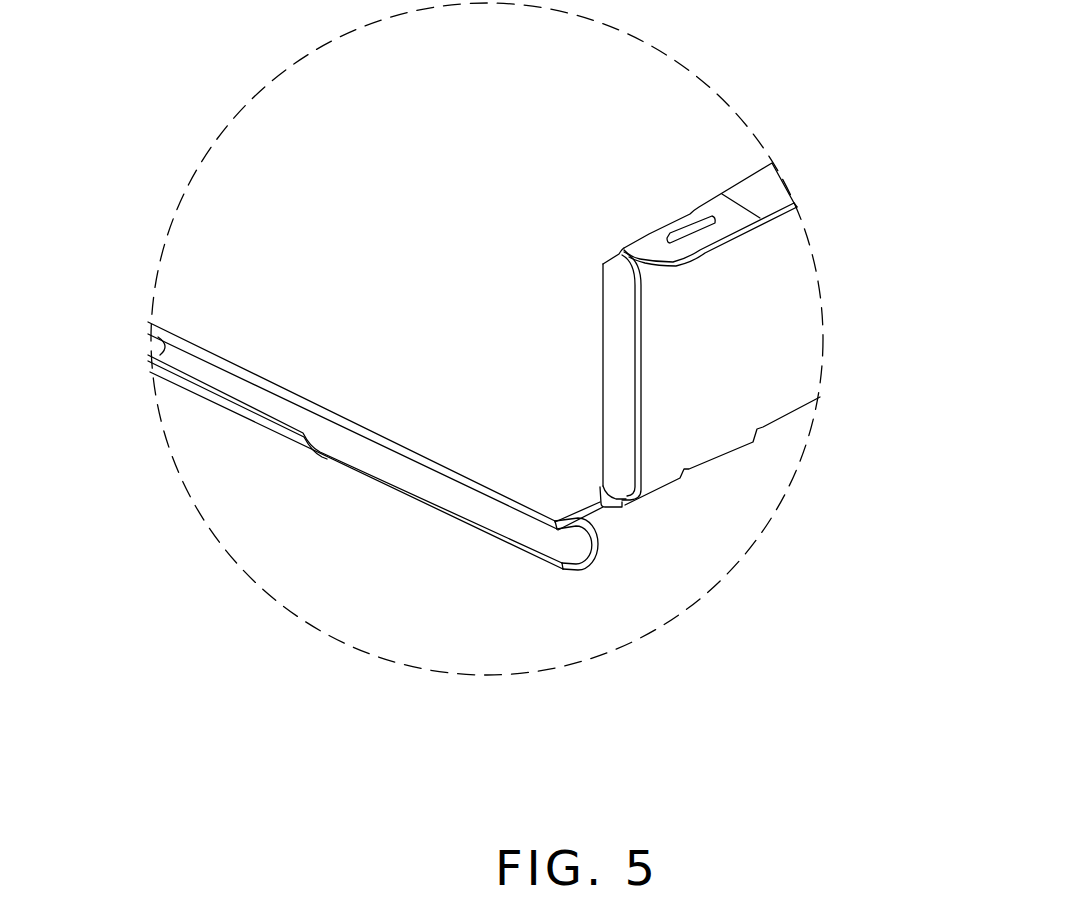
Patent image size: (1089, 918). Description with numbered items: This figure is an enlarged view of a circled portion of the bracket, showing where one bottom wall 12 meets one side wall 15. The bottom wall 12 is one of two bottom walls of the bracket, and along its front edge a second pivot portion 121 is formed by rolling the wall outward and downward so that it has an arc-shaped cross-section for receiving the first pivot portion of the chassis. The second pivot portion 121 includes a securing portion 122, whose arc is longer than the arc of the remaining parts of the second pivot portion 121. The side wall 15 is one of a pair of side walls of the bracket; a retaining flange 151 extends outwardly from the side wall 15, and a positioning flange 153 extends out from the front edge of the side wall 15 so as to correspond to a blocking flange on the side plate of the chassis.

The bottom wall 12 is at (373, 525).
The second pivot portion 121 is at (378, 460).
The securing portion 122 is at (262, 418).
The side wall 15 is at (710, 385).
The retaining flange 151 is at (770, 195).
The positioning flange 153 is at (613, 471).